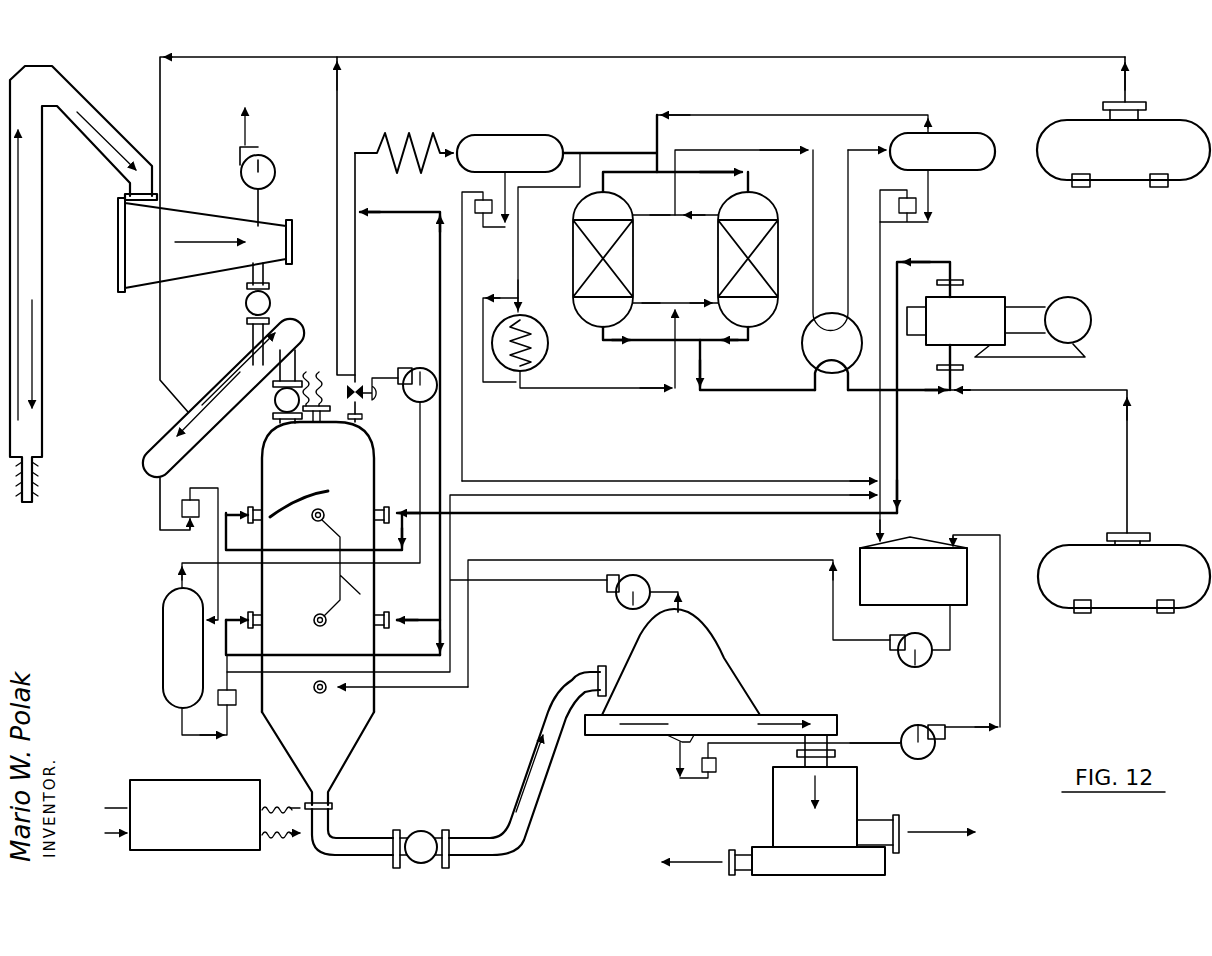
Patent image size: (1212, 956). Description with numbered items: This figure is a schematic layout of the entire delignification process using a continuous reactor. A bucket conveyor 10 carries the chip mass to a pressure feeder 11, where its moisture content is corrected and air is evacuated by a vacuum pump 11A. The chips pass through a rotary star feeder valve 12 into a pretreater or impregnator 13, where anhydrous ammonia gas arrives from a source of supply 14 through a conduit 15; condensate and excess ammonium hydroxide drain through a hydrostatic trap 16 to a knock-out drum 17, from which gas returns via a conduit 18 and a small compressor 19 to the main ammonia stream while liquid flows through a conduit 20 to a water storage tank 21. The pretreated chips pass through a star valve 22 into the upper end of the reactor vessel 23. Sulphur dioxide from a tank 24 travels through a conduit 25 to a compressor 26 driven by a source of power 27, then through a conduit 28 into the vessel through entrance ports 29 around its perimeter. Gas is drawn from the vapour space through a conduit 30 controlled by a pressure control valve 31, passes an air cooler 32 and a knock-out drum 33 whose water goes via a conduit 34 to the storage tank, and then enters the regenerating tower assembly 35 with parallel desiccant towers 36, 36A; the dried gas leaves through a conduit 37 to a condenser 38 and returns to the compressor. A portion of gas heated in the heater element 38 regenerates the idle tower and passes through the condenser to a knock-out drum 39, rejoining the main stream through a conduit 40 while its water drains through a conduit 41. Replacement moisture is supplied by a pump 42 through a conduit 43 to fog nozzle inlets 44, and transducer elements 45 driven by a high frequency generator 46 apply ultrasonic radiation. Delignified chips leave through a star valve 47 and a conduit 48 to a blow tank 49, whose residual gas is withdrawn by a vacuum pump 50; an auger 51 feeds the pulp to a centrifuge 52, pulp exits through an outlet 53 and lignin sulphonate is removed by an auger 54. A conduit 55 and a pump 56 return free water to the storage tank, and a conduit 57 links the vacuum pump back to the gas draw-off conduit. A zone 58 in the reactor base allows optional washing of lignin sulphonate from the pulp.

The bucket conveyor 10 is at (28, 232).
The pressure feeder 11 is at (172, 243).
The vacuum pump 11A is at (250, 160).
The rotary star feeder valve 12 is at (268, 303).
The pretreater or impregnator 13 is at (183, 440).
The source of supply 14 is at (1196, 152).
The conduit 15 is at (335, 56).
The hydrostatic trap 16 is at (176, 494).
The knock-out drum 17 is at (160, 612).
The conduit 18 is at (305, 568).
The small compressor 19 is at (412, 403).
The conduit 20 is at (272, 676).
The water storage tank 21 is at (964, 580).
The star valve 22 is at (275, 402).
The reactor vessel 23 is at (350, 478).
The tank 24 is at (1204, 580).
The conduit 25 is at (1046, 390).
The compressor 26 is at (962, 328).
The source of power 27 is at (1048, 320).
The conduit 28 is at (724, 522).
The entrance ports 29 is at (314, 520).
The conduit 30 is at (352, 424).
The pressure control valve 31 is at (356, 262).
The air cooler 32 is at (378, 150).
The knock-out drum 33 is at (532, 158).
The conduit 34 is at (726, 480).
The regenerating tower assembly 35 is at (692, 278).
The tower 36 is at (603, 259).
The tower 36A is at (748, 259).
The conduit 37 is at (732, 392).
The condenser 38 is at (538, 346).
The knock-out drum 39 is at (962, 158).
The conduit 40 is at (858, 102).
The conduit 41 is at (881, 234).
The pump 42 is at (912, 664).
The conduit 43 is at (828, 600).
The inlets 44 is at (322, 628).
The transducer elements 45 is at (312, 414).
The high frequency generator 46 is at (224, 814).
The star valve 47 is at (421, 838).
The conduit 48 is at (538, 758).
The blow tank 49 is at (694, 672).
The vacuum pump 50 is at (620, 598).
The auger 51 is at (636, 736).
The centrifuge 52 is at (815, 791).
The outlet 53 is at (900, 816).
The auger 54 is at (773, 861).
The conduit 55 is at (856, 738).
The pump 56 is at (912, 730).
The conduit 57 is at (440, 266).
The zone 58 is at (350, 724).